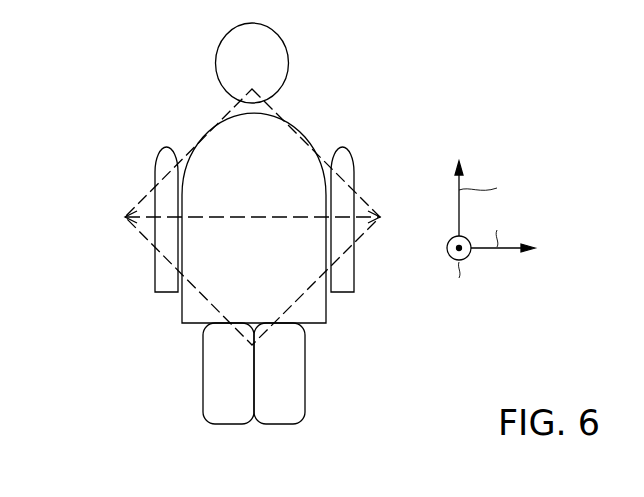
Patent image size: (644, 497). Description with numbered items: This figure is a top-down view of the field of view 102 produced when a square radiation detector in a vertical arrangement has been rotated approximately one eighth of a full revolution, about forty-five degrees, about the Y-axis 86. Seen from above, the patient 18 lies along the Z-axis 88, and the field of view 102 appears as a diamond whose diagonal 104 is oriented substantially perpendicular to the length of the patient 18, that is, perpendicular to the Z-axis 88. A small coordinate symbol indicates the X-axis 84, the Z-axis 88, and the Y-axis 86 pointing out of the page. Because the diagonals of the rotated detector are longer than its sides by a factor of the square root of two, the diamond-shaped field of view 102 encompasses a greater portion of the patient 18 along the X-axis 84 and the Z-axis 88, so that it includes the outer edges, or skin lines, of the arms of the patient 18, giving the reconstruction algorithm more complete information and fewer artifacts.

The patient 18 is at (298, 368).
The X-axis 84 is at (505, 250).
The Y-axis 86 is at (449, 247).
The Z-axis 88 is at (459, 195).
The field of view 102 is at (300, 138).
The diagonal 104 is at (233, 215).